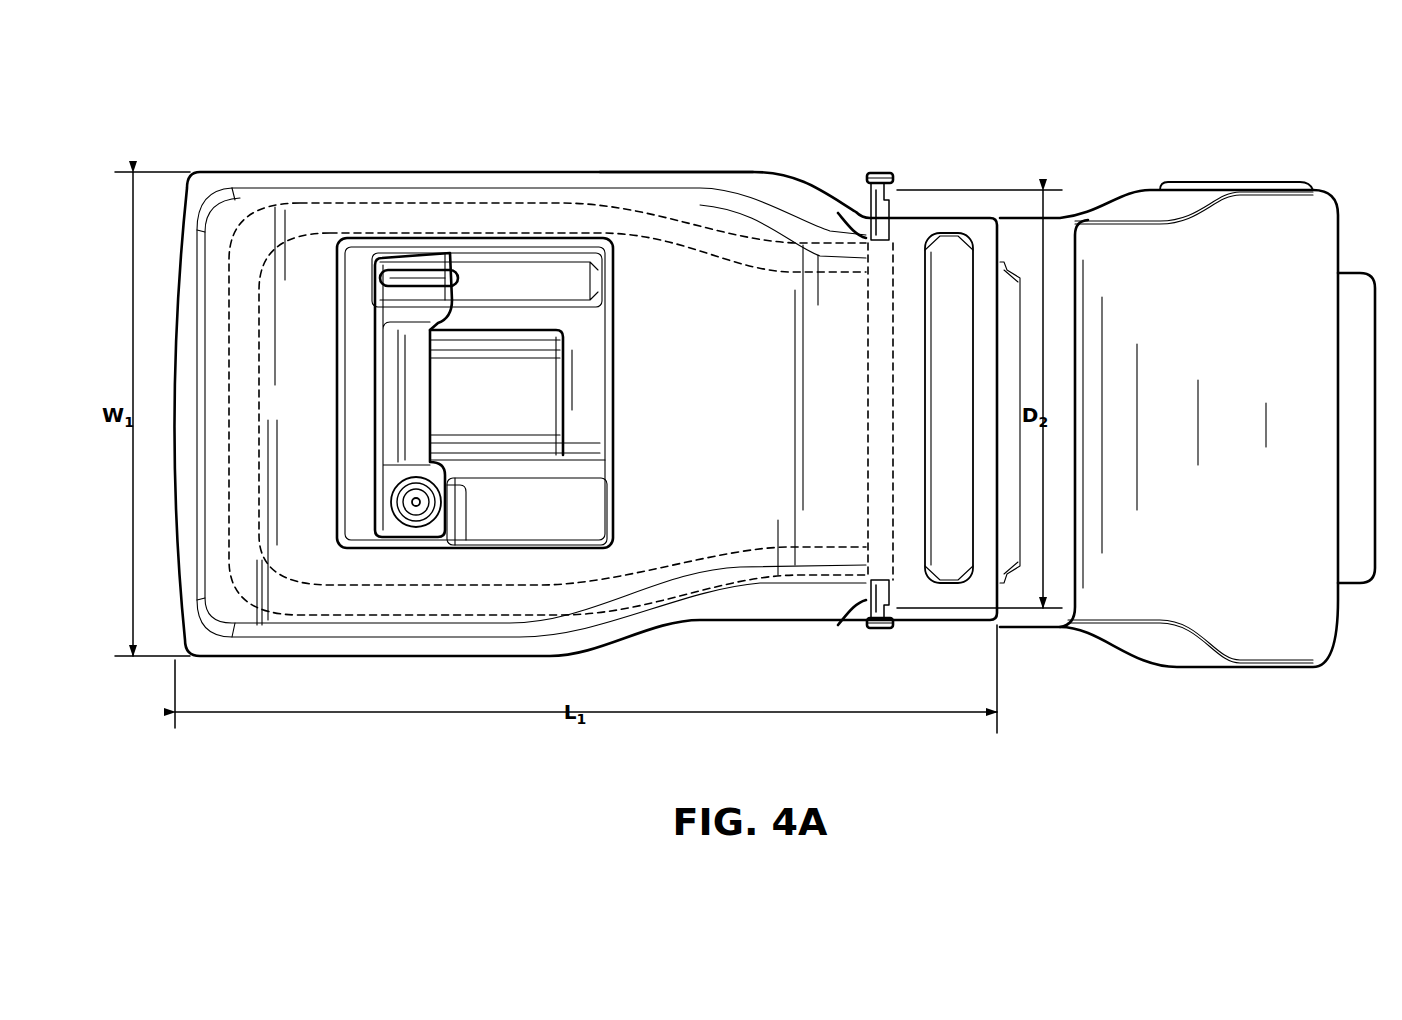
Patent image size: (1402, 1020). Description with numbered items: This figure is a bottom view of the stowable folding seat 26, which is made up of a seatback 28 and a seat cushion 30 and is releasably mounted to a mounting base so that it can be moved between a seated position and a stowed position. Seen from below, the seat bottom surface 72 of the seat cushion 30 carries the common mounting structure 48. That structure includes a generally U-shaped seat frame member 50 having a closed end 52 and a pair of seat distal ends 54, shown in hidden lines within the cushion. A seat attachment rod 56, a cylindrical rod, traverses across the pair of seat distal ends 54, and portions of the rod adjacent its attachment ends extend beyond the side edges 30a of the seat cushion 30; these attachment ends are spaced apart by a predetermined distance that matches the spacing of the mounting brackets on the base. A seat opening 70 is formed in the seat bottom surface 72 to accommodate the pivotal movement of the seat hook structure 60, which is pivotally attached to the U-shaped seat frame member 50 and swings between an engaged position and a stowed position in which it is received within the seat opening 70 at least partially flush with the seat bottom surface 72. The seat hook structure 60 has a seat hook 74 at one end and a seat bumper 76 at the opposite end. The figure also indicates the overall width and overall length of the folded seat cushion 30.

The stowable folding seat 26 is at (333, 108).
The seatback 28 is at (1245, 215).
The seat cushion 30 is at (268, 171).
The side edges 30a is at (925, 236).
The common mounting structure 48 is at (698, 168).
The generally U-shaped seat frame member 50 is at (566, 214).
The closed end 52 is at (250, 445).
The seat distal ends 54 is at (843, 258).
The seat attachment rod 56 is at (843, 207).
The seat hook structure 60 is at (455, 312).
The seat opening 70 is at (605, 398).
The seat bottom surface 72 is at (683, 469).
The seat hook 74 is at (440, 276).
The seat bumper 76 is at (428, 500).